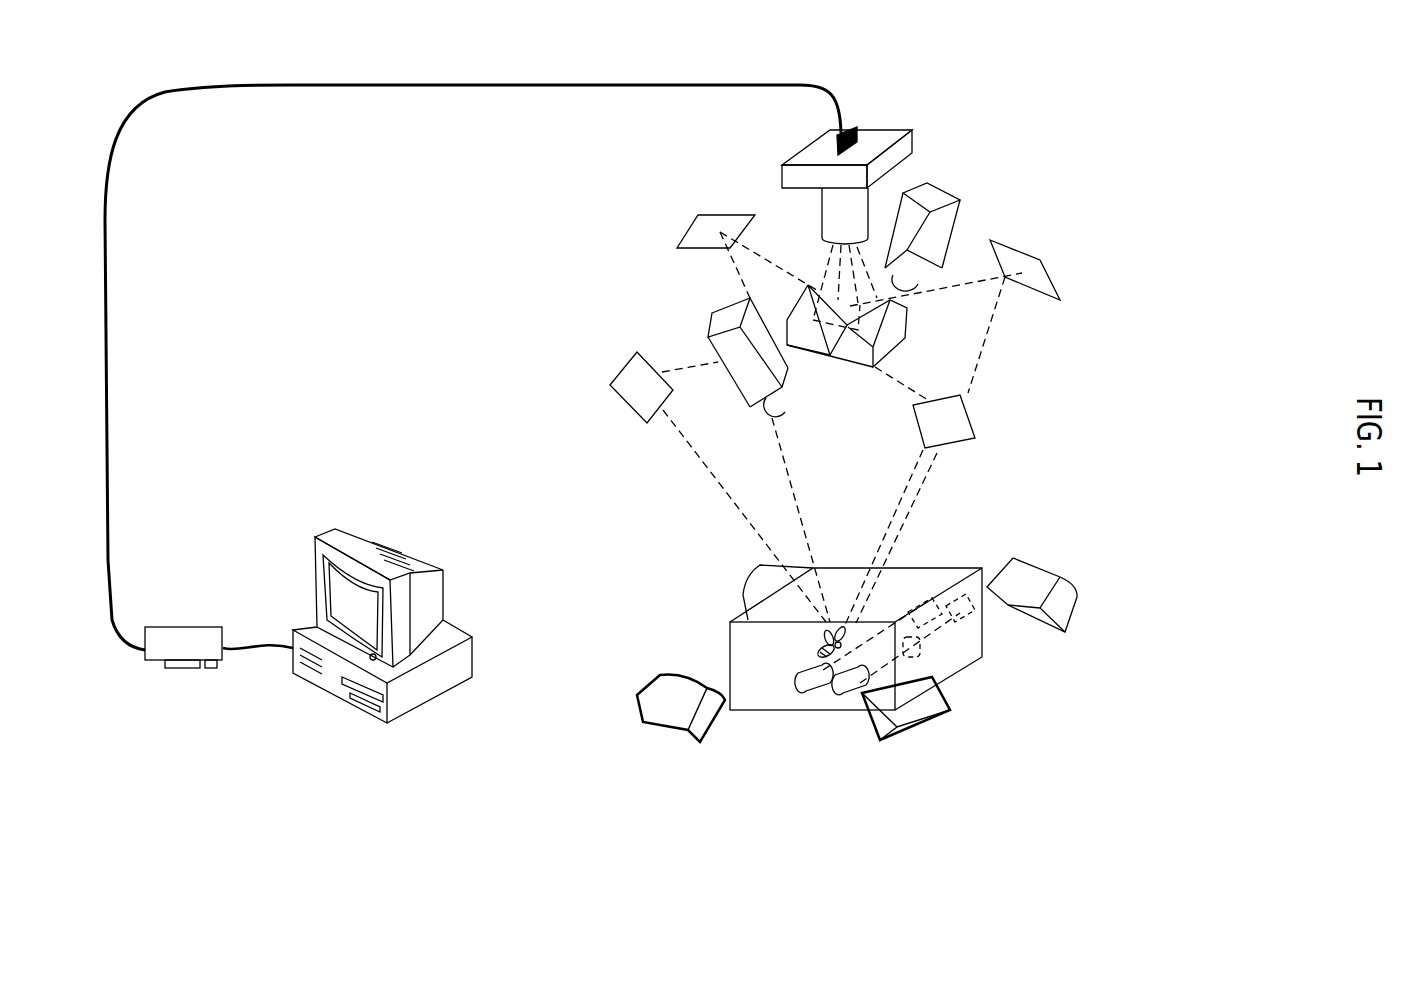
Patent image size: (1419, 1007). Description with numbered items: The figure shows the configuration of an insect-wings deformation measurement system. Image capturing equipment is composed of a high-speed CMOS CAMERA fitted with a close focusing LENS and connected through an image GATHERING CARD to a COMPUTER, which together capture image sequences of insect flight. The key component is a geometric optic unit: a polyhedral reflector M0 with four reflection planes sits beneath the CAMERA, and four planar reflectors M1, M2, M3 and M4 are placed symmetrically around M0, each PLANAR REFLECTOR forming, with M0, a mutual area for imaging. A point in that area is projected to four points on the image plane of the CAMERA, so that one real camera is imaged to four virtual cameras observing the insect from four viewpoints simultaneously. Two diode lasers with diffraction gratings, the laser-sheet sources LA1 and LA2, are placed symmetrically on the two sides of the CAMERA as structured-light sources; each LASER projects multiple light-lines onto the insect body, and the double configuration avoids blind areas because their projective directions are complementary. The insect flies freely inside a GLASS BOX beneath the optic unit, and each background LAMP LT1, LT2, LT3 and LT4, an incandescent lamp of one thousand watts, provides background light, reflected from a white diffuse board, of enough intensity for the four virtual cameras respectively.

The high-speed CMOS camera CAMERA is at (873, 145).
The close focusing lens LENS is at (845, 217).
The diode laser LASER is at (1039, 224).
The laser-sheet source LA1 is at (721, 357).
The laser-sheet source LA2 is at (941, 224).
The polyhedral reflector M0 is at (872, 326).
The planar reflector M1 is at (619, 387).
The planar reflector M2 is at (700, 225).
The planar reflector M3 is at (1115, 307).
The planar reflector M4 is at (970, 421).
The planar reflector PLANAR REFLECTOR is at (1151, 295).
The incandescent lamp LAMP is at (915, 622).
The background lamp LT1 is at (654, 708).
The background lamp LT2 is at (747, 589).
The background lamp LT3 is at (1062, 595).
The background lamp LT4 is at (939, 708).
The glass box GLASS BOX is at (768, 665).
The image gathering card GATHERING CARD is at (185, 643).
The computer COMPUTER is at (417, 652).